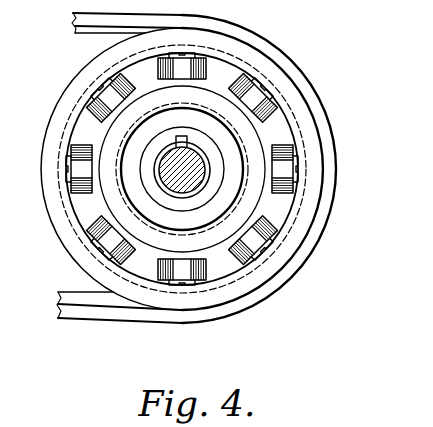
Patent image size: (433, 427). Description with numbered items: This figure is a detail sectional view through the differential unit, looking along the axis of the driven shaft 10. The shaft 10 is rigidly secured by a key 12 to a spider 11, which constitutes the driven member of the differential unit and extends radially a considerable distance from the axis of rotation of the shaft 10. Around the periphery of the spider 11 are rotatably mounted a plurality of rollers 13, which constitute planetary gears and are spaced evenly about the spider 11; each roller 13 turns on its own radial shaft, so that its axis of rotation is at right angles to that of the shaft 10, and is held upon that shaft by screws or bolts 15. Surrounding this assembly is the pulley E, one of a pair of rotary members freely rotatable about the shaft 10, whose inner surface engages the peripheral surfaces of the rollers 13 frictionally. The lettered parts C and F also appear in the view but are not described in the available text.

The driven shaft 10 is at (163, 177).
The spider 11 is at (212, 242).
The key 12 is at (179, 137).
The rollers 13 is at (207, 68).
The screws or bolts 15 is at (267, 100).
The clutch casing C is at (33, 130).
The pulley E is at (45, 205).
The flange band F is at (76, 31).